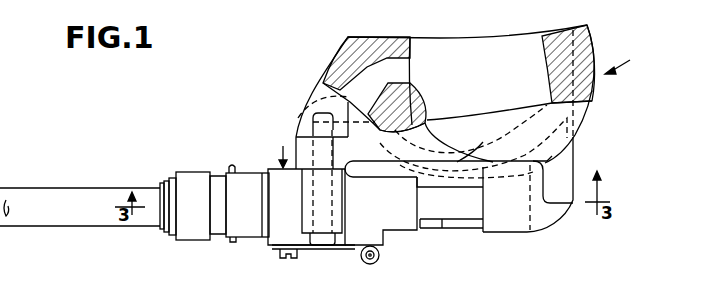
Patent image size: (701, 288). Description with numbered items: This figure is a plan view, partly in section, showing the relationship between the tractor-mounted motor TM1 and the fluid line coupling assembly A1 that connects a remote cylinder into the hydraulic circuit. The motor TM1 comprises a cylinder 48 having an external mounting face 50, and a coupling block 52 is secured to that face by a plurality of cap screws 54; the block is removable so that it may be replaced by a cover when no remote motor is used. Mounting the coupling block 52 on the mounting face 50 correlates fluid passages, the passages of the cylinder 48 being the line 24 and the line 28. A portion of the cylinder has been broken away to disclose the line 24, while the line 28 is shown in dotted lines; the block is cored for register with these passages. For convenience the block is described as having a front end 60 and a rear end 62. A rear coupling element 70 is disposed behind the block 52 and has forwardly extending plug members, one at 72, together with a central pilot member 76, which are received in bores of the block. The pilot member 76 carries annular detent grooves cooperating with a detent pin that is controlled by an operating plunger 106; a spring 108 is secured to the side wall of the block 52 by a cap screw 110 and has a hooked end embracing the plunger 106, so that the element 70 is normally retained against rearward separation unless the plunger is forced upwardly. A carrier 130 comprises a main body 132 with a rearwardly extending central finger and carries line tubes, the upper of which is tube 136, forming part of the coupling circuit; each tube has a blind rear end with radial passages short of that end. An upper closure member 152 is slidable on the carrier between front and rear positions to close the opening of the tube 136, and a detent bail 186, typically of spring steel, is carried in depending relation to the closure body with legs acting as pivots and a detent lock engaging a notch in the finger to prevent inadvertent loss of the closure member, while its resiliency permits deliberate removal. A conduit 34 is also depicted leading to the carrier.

The line 24 is at (398, 70).
The line 28 is at (578, 118).
The conduit 34 is at (45, 193).
The cylinder 48 is at (593, 97).
The external mounting face 50 is at (546, 163).
The coupling block 52 is at (278, 180).
The cap screws 54 is at (318, 238).
The front end 60 is at (270, 180).
The rear end 62 is at (418, 229).
The rear coupling element 70 is at (516, 240).
The plug member 72 is at (470, 212).
The central pilot member 76 is at (453, 229).
The operating plunger 106 is at (380, 256).
The spring 108 is at (304, 252).
The cap screw 110 is at (283, 254).
The carrier 130 is at (182, 167).
The main body 132 is at (188, 232).
The line tube 136 is at (222, 178).
The upper closure member 152 is at (237, 165).
The detent bail 186 is at (234, 242).
The fluid line coupling assembly A1 is at (280, 147).
The motor TM1 is at (638, 59).